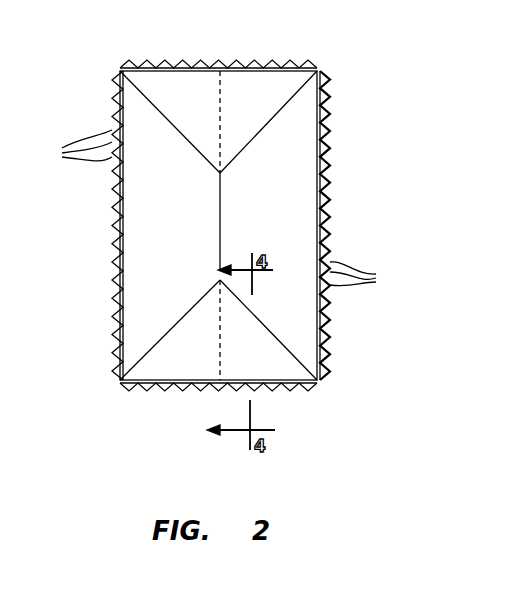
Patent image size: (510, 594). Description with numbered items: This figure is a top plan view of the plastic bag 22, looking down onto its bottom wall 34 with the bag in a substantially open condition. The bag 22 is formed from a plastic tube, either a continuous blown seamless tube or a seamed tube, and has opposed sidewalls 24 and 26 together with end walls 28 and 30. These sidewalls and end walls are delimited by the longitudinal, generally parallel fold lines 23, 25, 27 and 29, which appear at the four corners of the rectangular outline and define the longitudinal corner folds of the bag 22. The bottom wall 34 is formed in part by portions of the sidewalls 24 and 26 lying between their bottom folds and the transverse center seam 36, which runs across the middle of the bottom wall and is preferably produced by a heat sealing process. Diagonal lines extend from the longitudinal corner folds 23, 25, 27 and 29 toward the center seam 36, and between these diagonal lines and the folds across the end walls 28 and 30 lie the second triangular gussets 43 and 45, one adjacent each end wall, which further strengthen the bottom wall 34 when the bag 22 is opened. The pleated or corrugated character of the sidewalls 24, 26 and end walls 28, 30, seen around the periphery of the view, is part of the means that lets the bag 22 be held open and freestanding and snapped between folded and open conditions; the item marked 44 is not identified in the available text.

The plastic bag 22 is at (335, 67).
The longitudinal fold line 23 is at (122, 71).
The sidewall 24 is at (113, 237).
The longitudinal fold line 25 is at (120, 380).
The sidewall 26 is at (326, 229).
The longitudinal fold line 27 is at (323, 390).
The end wall 28 is at (193, 390).
The longitudinal fold line 29 is at (322, 68).
The end wall 30 is at (219, 67).
The bottom wall 34 is at (302, 203).
The transverse center seam 36 is at (220, 222).
The second triangular gusset 43 is at (268, 107).
The fibers 44 is at (215, 208).
The second triangular gusset 45 is at (263, 348).